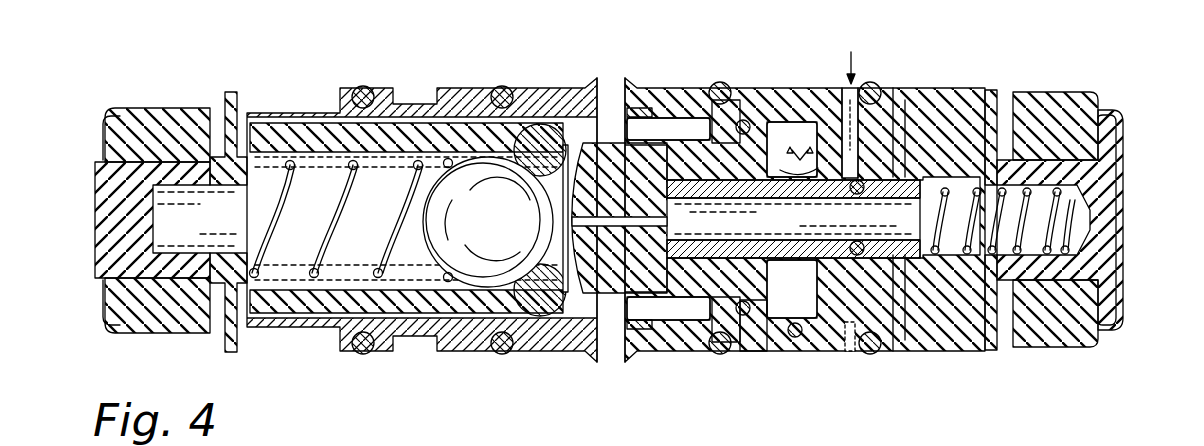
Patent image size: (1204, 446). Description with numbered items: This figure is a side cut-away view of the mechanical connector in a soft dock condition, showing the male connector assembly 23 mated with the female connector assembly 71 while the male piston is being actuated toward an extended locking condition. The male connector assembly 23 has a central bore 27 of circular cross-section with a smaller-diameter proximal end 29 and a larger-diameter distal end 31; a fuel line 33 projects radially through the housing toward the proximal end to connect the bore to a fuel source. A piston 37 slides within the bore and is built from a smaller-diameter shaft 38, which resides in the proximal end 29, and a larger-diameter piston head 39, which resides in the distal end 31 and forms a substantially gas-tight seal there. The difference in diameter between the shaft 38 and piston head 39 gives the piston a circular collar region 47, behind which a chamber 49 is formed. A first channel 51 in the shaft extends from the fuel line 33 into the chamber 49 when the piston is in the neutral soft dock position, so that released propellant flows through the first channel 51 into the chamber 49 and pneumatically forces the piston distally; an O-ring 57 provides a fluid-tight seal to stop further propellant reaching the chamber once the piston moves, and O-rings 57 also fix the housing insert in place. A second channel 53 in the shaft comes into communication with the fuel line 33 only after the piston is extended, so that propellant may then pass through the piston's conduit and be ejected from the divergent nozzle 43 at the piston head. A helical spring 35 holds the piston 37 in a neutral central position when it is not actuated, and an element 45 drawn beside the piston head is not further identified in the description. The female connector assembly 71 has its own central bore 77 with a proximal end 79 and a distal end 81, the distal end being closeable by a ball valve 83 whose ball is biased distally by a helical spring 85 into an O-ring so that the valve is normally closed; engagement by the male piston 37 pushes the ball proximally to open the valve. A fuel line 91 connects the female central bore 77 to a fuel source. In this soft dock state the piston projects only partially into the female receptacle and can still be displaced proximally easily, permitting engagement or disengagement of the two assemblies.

The male connector assembly 23 is at (1040, 62).
The central bore 27 is at (1070, 205).
The proximal end 29 is at (1100, 210).
The distal end 31 is at (665, 118).
The fuel line 33 is at (855, 86).
The helical spring 35 is at (1125, 258).
The piston 37 is at (690, 130).
The shaft 38 is at (850, 353).
The piston head 39 is at (611, 300).
The divergent nozzle 43 is at (555, 350).
The seat plate 45 is at (565, 140).
The collar region 47 is at (762, 350).
The chamber 49 is at (775, 120).
The first channel 51 is at (800, 145).
The second channel 53 is at (945, 120).
The O-ring 57 is at (498, 355).
The female connector assembly 71 is at (210, 74).
The central bore 77 is at (380, 183).
The proximal end 79 is at (263, 172).
The distal end 81 is at (502, 86).
The ball valve 83 is at (370, 352).
The helical spring 85 is at (309, 278).
The fuel line 91 is at (428, 254).